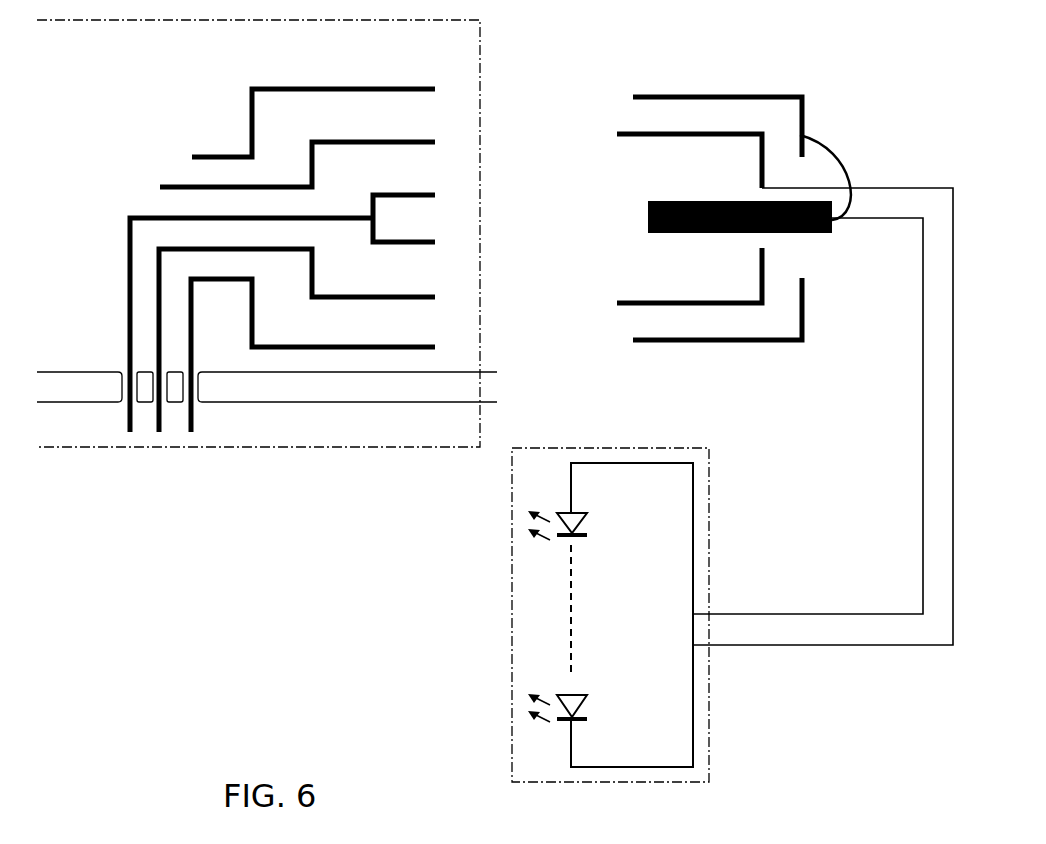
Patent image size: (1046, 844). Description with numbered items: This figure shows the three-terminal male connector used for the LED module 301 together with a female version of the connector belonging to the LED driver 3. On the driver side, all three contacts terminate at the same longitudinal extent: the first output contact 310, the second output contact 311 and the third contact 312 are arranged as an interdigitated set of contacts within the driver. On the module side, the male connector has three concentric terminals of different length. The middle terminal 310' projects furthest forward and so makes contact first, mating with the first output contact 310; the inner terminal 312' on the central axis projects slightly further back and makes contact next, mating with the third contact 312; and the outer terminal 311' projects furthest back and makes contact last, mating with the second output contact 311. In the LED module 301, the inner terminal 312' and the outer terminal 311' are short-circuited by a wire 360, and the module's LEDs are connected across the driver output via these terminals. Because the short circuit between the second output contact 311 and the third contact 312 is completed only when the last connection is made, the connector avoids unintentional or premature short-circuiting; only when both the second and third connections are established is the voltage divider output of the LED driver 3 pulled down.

The LED driver 3 is at (285, 448).
The first output contact 310 is at (315, 340).
The second output contact 311 is at (331, 355).
The third contact 312 is at (300, 313).
The middle terminal 310' is at (689, 161).
The outer terminal 311' is at (717, 113).
The inner terminal 312' is at (740, 205).
The wire 360 is at (837, 153).
The LED module 301 is at (710, 537).